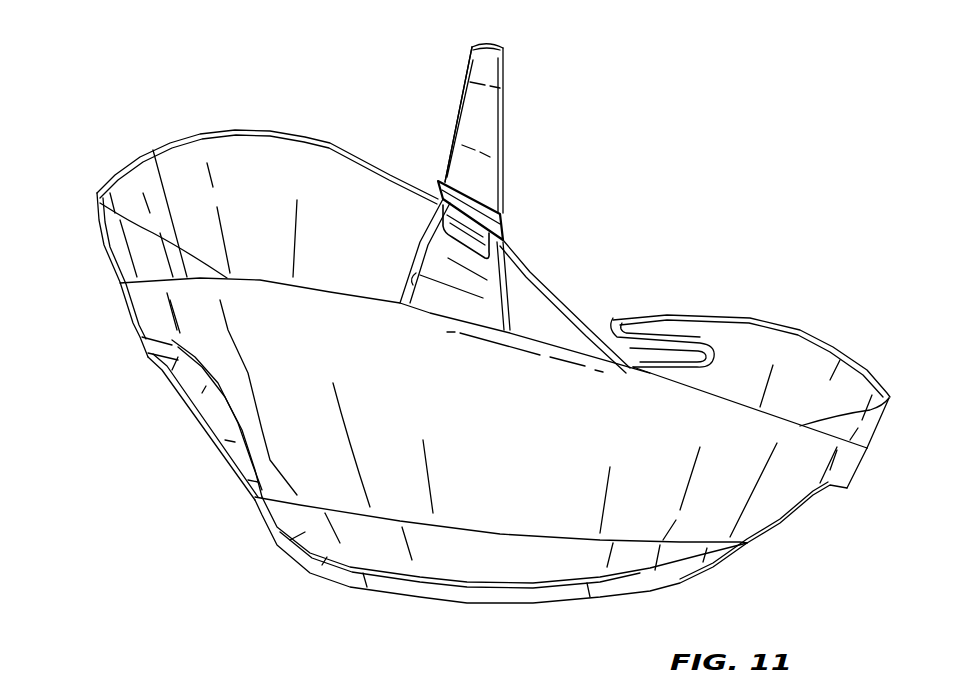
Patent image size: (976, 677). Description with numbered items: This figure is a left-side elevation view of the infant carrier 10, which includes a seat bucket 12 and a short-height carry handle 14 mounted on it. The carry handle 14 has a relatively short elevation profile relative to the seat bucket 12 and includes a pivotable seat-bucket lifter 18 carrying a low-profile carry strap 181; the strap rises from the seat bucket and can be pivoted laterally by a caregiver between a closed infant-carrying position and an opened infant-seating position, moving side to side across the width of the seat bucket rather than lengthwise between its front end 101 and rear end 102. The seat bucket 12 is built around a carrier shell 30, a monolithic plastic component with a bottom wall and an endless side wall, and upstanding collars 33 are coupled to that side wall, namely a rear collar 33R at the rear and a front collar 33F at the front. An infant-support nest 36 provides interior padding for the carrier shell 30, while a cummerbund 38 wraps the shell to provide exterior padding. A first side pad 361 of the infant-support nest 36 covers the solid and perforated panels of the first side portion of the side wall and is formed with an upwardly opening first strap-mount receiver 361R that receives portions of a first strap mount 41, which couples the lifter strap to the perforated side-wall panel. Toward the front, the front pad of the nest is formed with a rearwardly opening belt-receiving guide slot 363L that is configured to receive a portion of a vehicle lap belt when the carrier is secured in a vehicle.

The infant carrier 10 is at (692, 164).
The seat bucket 12 is at (123, 323).
The short-height carry handle 14 is at (510, 46).
The pivotable seat-bucket lifter 18 is at (449, 126).
The low-profile carry strap 181 is at (497, 107).
The carrier shell 30 is at (98, 243).
The collar 33 is at (821, 335).
The rear collar 33R is at (140, 247).
The front collar 33F is at (888, 398).
The infant-support nest 36 is at (181, 135).
The first side pad 361 is at (335, 141).
The first strap-mount receiver 361R is at (413, 278).
The belt-receiving guide slot 363L is at (664, 364).
The cummerbund 38 is at (281, 384).
The first strap mount 41 is at (489, 296).
The front end 101 is at (874, 475).
The rear end 102 is at (130, 354).